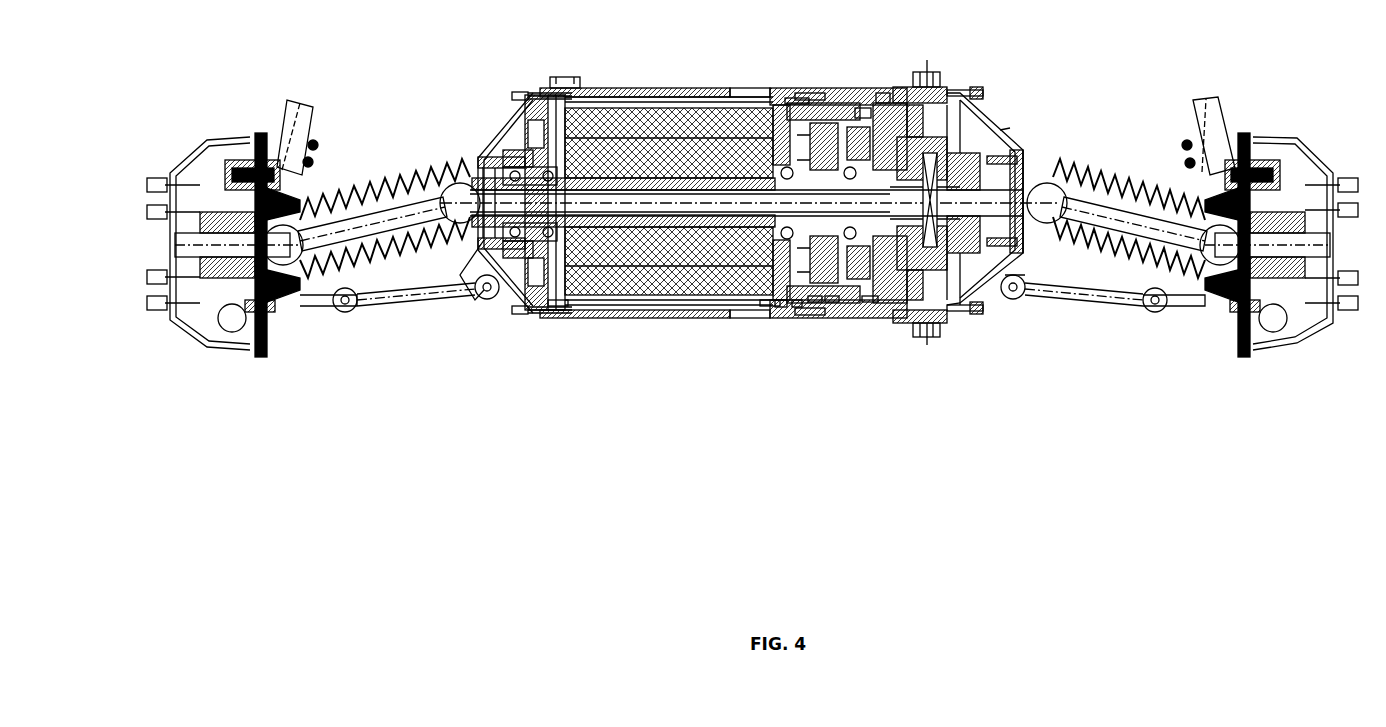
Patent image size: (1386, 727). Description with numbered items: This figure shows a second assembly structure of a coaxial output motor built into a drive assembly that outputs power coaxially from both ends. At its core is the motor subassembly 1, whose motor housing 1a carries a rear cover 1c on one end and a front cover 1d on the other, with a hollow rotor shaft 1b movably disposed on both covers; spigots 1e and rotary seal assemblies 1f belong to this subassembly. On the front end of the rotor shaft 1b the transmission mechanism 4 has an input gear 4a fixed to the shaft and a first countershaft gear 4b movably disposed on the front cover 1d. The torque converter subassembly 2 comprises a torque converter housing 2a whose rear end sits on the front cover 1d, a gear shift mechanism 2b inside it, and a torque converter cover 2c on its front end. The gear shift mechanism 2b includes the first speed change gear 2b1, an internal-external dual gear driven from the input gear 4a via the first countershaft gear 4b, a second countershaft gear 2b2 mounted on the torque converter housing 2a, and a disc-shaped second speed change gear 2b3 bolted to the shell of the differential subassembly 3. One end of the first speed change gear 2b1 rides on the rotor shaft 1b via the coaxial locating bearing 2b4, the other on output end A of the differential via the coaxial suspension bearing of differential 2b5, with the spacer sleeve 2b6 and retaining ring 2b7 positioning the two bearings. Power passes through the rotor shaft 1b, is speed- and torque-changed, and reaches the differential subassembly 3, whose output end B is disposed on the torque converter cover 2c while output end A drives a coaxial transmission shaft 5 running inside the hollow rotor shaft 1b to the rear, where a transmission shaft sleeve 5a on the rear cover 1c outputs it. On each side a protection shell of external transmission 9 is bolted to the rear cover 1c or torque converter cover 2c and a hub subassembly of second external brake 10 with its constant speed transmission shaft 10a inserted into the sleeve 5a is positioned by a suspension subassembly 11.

The motor subassembly 1 is at (625, 113).
The motor housing 1a is at (647, 87).
The rotor shaft 1b is at (765, 108).
The rear cover 1c is at (533, 127).
The front cover 1d is at (797, 105).
The spigots 1e is at (545, 108).
The rotary seal assemblies 1f is at (556, 286).
The torque converter subassembly 2 is at (963, 95).
The torque converter housing 2a is at (845, 105).
The gear shift mechanism 2b is at (920, 115).
The first speed change gear 2b1 is at (832, 303).
The second countershaft gear 2b2 is at (870, 307).
The second speed change gear 2b3 is at (887, 305).
The coaxial locating bearing 2b4 is at (815, 303).
The coaxial suspension bearing of differential 2b5 is at (848, 300).
The spacer sleeve 2b6 is at (863, 113).
The retaining ring 2b7 is at (882, 97).
The torque converter cover 2c is at (983, 97).
The differential subassembly 3 is at (990, 135).
The transmission mechanism 4 is at (823, 115).
The input gear 4a is at (780, 305).
The first countershaft gear 4b is at (797, 307).
The coaxial transmission shaft 5 is at (612, 205).
The transmission shaft sleeve 5a is at (473, 158).
The protection shell of external transmission 9 is at (492, 133).
The hub subassembly of second external brake 10 is at (273, 310).
The constant speed transmission shaft 10a is at (400, 213).
The suspension subassembly 11 is at (305, 120).
The output end A is at (1013, 120).
The output end B is at (937, 73).